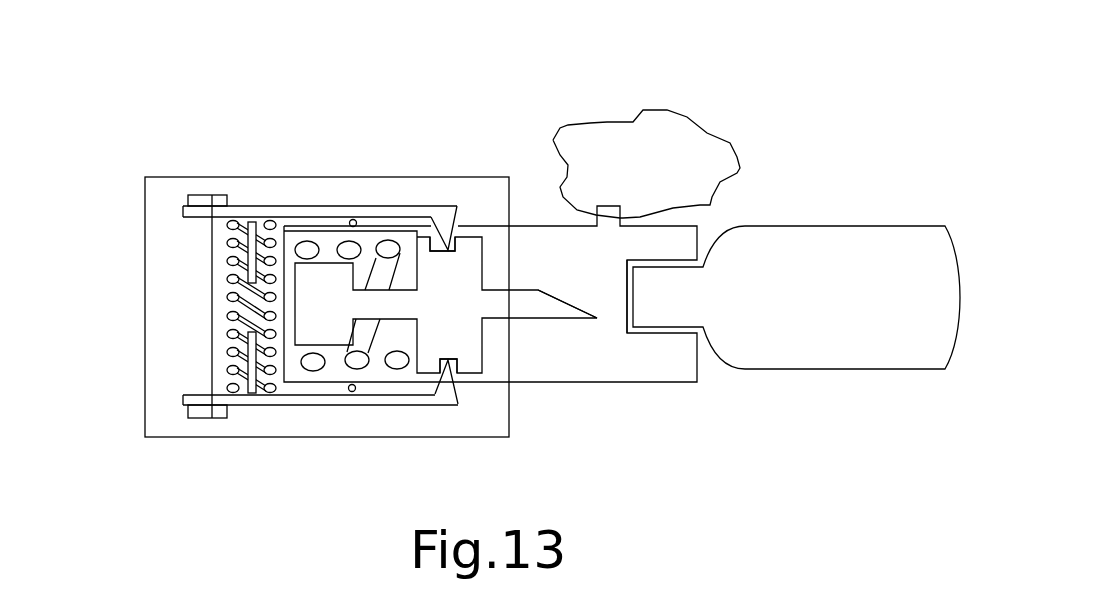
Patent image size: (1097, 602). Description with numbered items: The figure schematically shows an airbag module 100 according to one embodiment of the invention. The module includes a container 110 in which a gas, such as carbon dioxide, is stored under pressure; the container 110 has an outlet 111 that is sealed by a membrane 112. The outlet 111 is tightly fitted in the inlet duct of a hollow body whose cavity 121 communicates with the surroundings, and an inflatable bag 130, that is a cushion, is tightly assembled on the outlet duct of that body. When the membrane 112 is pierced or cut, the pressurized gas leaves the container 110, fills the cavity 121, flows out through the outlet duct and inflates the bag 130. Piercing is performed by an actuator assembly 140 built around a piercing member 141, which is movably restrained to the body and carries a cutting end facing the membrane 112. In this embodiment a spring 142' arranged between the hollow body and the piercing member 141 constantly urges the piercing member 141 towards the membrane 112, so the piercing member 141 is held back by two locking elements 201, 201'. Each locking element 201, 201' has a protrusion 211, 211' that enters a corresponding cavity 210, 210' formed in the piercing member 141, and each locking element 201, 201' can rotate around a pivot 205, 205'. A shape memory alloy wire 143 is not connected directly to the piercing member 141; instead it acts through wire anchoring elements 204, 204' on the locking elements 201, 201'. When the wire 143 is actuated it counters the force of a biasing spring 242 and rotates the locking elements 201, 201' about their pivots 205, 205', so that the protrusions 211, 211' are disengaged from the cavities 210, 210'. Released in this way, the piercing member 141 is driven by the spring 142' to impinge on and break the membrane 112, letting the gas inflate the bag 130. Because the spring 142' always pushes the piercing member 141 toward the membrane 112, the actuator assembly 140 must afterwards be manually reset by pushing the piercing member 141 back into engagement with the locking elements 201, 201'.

The airbag module 100 is at (782, 146).
The container 110 is at (870, 369).
The outlet 111 is at (667, 270).
The membrane 112 is at (630, 300).
The cavity 121 is at (561, 366).
The inflatable bag 130 is at (603, 132).
The actuator assembly 140 is at (146, 125).
The piercing member 141 is at (511, 383).
The spring 142' is at (353, 228).
The shape memory alloy wire 143 is at (212, 262).
The locking element 201 is at (326, 158).
The locking element 201' is at (290, 444).
The wire anchoring element 204 is at (139, 170).
The wire anchoring element 204' is at (143, 410).
The pivot 205 is at (358, 177).
The pivot 205' is at (287, 430).
The cavity 210 is at (494, 219).
The cavity 210' is at (429, 425).
The protrusion 211 is at (478, 189).
The protrusion 211' is at (403, 421).
The biasing spring 242 is at (232, 217).